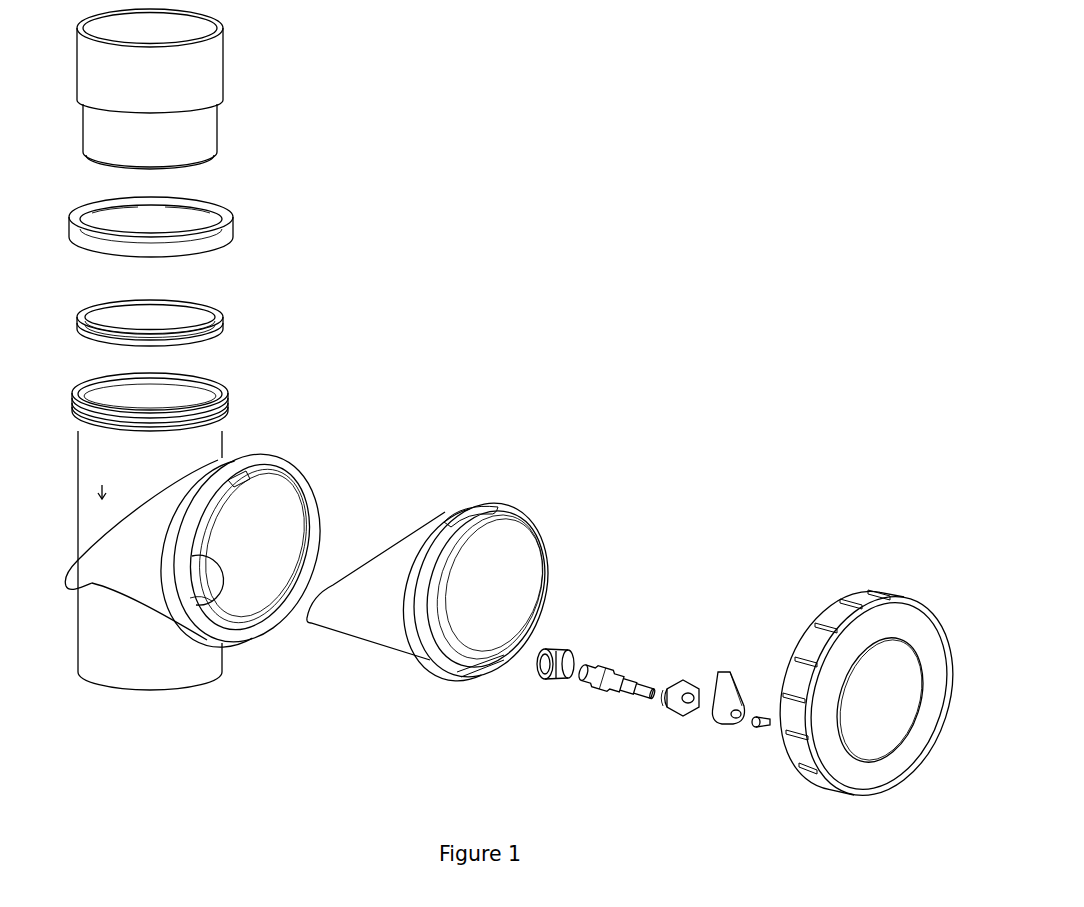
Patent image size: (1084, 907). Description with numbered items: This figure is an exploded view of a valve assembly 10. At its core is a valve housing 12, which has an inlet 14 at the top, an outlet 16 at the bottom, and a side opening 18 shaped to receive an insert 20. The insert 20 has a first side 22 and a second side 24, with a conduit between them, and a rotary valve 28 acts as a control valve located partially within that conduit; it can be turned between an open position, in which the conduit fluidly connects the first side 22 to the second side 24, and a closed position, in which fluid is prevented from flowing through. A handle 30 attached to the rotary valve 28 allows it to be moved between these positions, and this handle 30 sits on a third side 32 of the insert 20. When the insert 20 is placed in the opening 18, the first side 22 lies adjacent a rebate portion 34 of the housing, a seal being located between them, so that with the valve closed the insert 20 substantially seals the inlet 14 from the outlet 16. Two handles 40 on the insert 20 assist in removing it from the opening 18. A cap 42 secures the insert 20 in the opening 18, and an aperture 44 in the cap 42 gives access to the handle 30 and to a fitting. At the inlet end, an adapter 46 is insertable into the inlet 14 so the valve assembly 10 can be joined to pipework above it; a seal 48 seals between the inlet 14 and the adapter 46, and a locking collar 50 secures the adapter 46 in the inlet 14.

The valve assembly 10 is at (542, 168).
The valve housing 12 is at (218, 548).
The inlet 14 is at (118, 405).
The outlet 16 is at (150, 695).
The opening 18 is at (273, 540).
The insert 20 is at (471, 586).
The first side 22 is at (407, 530).
The second side 24 is at (373, 647).
The rotary valve 28 is at (603, 680).
The handle 30 is at (720, 713).
The third side 32 is at (492, 598).
The rebate portion 34 is at (232, 484).
The handles 40 is at (477, 508).
The cap 42 is at (864, 710).
The aperture 44 is at (888, 715).
The adapter 46 is at (202, 80).
The seal 48 is at (208, 337).
The locking collar 50 is at (212, 247).